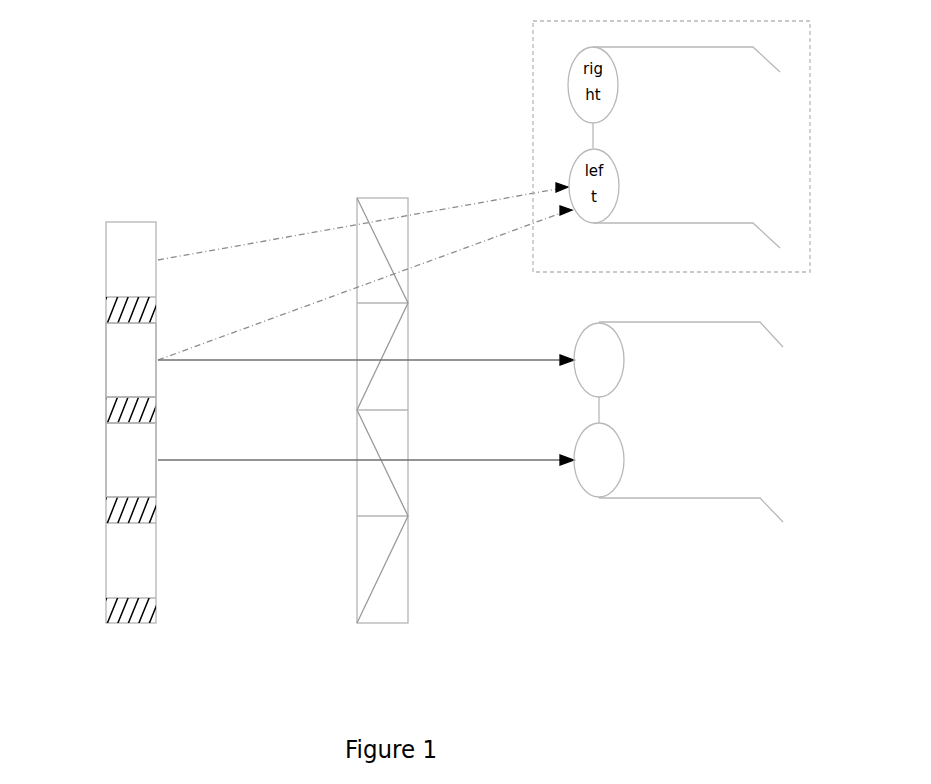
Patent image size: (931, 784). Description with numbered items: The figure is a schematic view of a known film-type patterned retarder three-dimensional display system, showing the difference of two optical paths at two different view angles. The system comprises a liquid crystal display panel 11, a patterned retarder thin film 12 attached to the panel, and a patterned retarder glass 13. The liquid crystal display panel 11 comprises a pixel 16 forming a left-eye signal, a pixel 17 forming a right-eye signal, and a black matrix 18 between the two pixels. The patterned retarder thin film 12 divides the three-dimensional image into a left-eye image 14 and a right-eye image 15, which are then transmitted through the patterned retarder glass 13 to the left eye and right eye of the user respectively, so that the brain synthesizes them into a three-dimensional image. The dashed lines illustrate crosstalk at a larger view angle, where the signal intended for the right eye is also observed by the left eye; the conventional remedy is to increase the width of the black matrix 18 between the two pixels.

The liquid crystal display panel 11 is at (123, 211).
The patterned retarder thin film 12 is at (374, 183).
The patterned retarder glass 13 is at (657, 498).
The left-eye image 14 is at (458, 460).
The right-eye image 15 is at (458, 360).
The pixel forming left-eye signal 16 is at (115, 458).
The pixel forming right-eye signal 17 is at (115, 360).
The black matrix 18 is at (108, 410).